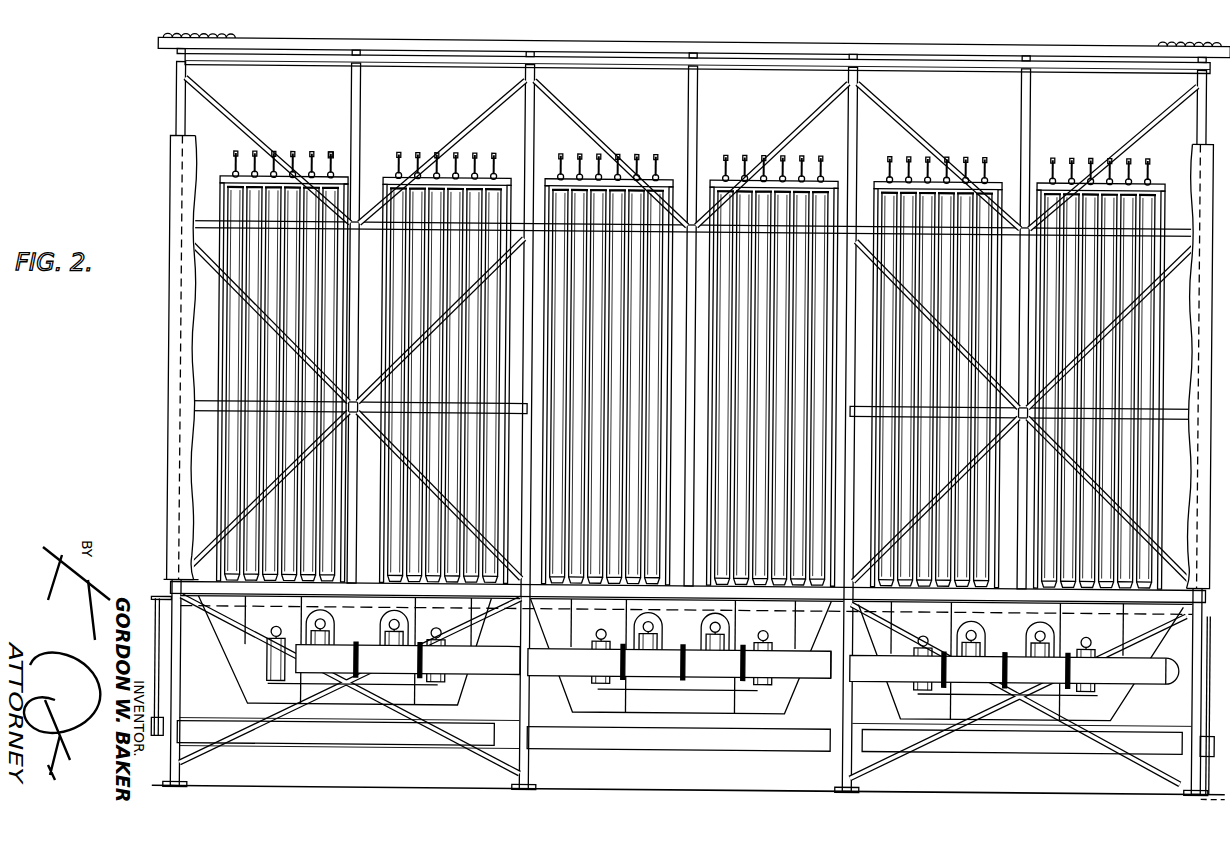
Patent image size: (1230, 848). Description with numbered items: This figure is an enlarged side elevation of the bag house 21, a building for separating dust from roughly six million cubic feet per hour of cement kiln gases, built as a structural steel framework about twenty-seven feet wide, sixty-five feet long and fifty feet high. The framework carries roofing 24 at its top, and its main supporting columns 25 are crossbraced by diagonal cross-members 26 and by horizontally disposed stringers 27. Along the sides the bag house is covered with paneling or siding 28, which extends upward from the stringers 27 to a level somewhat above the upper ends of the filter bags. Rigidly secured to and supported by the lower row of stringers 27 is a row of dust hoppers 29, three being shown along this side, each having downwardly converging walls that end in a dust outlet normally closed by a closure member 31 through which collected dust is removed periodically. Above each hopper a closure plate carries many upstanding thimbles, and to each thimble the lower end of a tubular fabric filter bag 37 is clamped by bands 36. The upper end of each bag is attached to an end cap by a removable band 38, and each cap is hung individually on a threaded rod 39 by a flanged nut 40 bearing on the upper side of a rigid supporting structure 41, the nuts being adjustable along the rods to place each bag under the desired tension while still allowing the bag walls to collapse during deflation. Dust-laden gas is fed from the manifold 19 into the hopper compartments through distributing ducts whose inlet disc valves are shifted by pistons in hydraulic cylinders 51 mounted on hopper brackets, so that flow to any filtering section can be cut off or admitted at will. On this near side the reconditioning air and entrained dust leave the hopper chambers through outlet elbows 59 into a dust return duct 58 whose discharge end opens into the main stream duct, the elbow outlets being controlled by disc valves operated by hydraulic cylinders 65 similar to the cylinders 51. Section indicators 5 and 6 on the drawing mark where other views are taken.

The manifold 19 is at (1212, 742).
The bag house 21 is at (125, 312).
The roofing 24 is at (183, 43).
The main supporting columns 25 is at (173, 108).
The cross-members 26 is at (244, 132).
The stringers 27 is at (383, 234).
The paneling or siding 28 is at (188, 385).
The dust hoppers 29 is at (1153, 646).
The closure member 31 is at (465, 712).
The bands 36 is at (170, 571).
The fabric filter bag 37 is at (332, 300).
The removable band 38 is at (232, 192).
The threaded rods 39 is at (232, 160).
The flanged nuts 40 is at (232, 182).
The rigid supporting structure 41 is at (320, 176).
The hydraulic cylinder 51 is at (283, 636).
The dust return duct 58 is at (828, 678).
The outlet elbows 59 is at (657, 628).
The hydraulic cylinder 65 is at (333, 627).
The section line 5 is at (146, 557).
The section line 6 is at (404, 554).